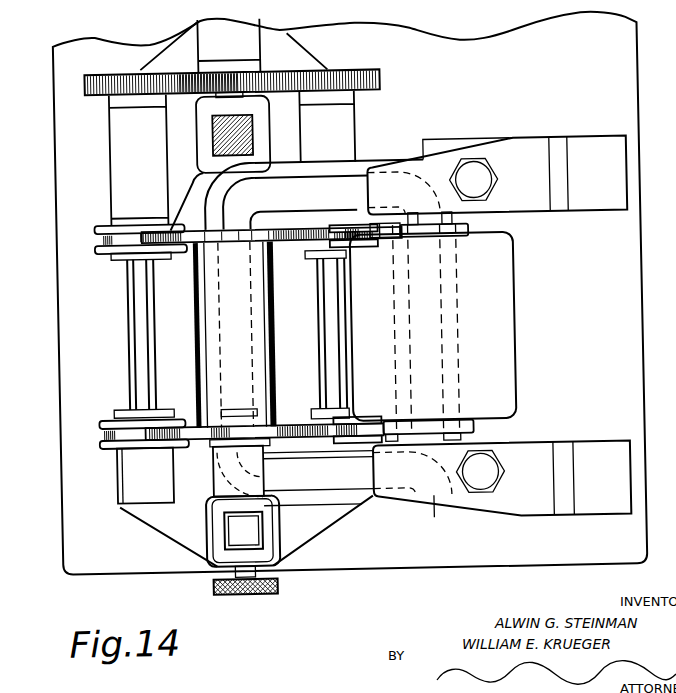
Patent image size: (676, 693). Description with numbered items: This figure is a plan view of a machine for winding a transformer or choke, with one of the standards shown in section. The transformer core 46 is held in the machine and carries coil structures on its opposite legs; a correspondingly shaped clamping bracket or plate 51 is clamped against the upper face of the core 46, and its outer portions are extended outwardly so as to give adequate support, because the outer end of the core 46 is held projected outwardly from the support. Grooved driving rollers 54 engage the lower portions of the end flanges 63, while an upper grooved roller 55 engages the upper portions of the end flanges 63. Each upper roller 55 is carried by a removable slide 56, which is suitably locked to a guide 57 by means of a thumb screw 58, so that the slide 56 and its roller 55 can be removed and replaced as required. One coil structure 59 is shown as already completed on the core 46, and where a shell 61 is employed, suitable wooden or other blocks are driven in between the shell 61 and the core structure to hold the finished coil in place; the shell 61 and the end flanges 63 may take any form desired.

The core 46 is at (346, 476).
The clamping bracket or plate 51 is at (516, 161).
The grooved driving rollers 54 is at (101, 249).
The upper grooved roller 55 is at (236, 412).
The removable slide 56 is at (276, 529).
The guide 57 is at (227, 129).
The thumb screw 58 is at (247, 591).
The completed coil structure 59 is at (514, 330).
The shell 61 is at (281, 319).
The end flanges 63 is at (229, 245).